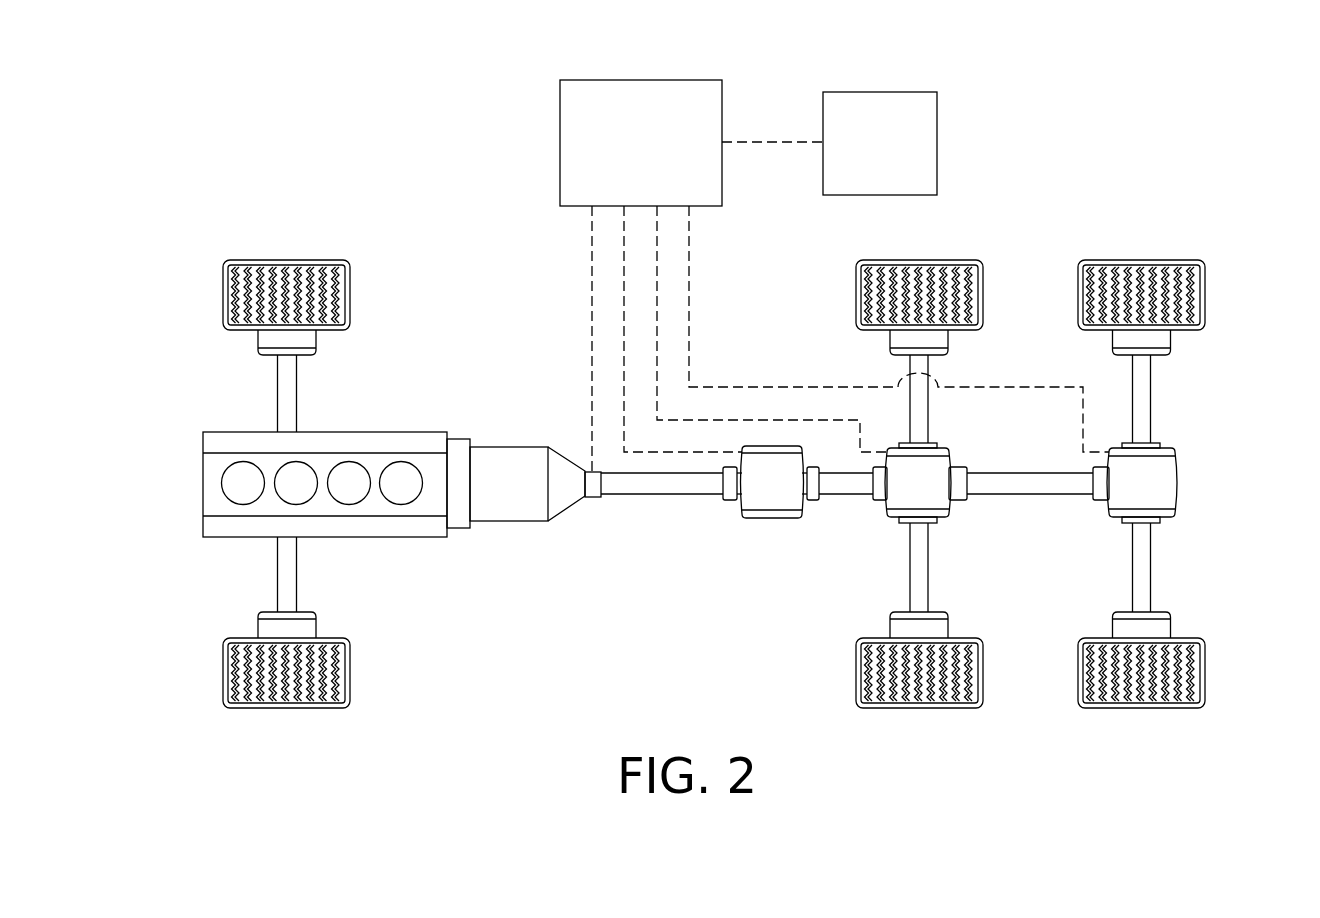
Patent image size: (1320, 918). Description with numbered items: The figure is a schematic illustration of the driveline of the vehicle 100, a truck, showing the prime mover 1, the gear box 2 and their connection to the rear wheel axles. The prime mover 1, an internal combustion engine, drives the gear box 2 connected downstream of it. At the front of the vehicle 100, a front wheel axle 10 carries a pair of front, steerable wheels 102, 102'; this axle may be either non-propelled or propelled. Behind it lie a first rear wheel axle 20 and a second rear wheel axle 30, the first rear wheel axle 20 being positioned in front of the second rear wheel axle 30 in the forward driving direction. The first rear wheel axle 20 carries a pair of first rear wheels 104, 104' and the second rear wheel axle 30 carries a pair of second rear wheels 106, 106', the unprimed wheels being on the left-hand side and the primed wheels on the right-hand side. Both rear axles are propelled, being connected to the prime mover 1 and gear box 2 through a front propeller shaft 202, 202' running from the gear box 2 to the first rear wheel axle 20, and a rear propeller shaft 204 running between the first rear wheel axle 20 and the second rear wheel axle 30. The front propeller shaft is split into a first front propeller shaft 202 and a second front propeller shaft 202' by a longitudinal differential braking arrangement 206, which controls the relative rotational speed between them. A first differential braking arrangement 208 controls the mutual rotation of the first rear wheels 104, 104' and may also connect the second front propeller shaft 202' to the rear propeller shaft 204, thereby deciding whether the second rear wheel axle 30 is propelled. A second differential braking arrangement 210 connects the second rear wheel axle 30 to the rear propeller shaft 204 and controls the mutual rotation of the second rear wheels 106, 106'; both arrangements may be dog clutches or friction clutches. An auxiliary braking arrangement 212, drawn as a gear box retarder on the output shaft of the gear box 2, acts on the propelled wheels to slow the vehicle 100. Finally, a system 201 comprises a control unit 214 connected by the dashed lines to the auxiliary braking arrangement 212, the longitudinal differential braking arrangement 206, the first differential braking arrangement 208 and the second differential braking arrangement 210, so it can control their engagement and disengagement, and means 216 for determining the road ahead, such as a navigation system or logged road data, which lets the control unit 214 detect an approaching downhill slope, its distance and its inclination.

The vehicle 100 is at (248, 91).
The system for controlling the at least one differential braking arrangement 201 is at (850, 236).
The control unit 214 is at (639, 80).
The means for determining the road ahead of the vehicle 216 is at (876, 92).
The prime mover 1 is at (204, 485).
The gear box 2 is at (507, 522).
The front wheel axle 10 is at (278, 573).
The first rear wheel axle 20 is at (909, 575).
The second rear wheel axle 30 is at (1132, 568).
The front wheel 102 is at (286, 684).
The front wheel 102' is at (286, 284).
The first rear wheel 104 is at (919, 683).
The first rear wheel 104' is at (918, 284).
The second rear wheel 106 is at (1141, 683).
The second rear wheel 106' is at (1141, 284).
The first front propeller shaft 202 is at (662, 527).
The second front propeller shaft 202' is at (825, 527).
The rear propeller shaft 204 is at (1003, 496).
The longitudinal differential braking arrangement 206 is at (762, 519).
The first differential braking arrangement 208 is at (952, 520).
The second differential braking arrangement 210 is at (1176, 483).
The auxiliary braking arrangement 212 is at (590, 498).